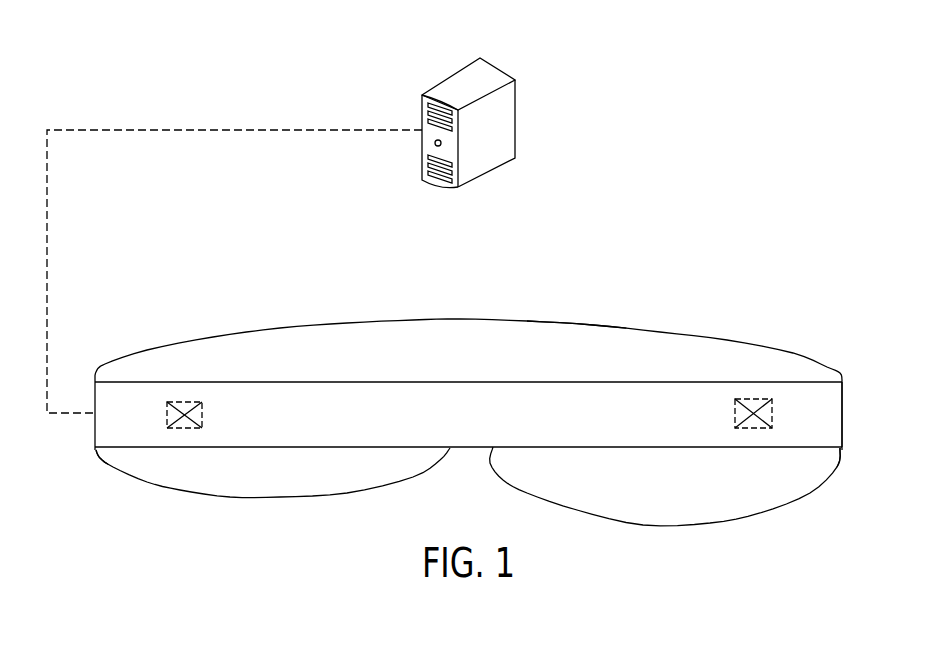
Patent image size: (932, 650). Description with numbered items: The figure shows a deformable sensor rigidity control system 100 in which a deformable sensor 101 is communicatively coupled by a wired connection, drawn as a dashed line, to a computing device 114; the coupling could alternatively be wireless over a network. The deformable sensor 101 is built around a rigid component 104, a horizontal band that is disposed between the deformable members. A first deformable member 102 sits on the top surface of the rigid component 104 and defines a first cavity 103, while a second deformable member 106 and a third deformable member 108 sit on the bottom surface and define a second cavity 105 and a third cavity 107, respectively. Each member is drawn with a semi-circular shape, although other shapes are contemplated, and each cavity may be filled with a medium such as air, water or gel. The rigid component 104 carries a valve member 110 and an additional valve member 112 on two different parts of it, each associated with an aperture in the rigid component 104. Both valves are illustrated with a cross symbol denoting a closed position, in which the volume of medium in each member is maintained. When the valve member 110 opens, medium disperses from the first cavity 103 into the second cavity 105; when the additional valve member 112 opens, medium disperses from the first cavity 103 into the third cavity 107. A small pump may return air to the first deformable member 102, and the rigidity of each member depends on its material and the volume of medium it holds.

The deformable sensor rigidity control system 100 is at (798, 54).
The deformable sensor 101 is at (444, 290).
The first deformable member 102 is at (468, 318).
The first cavity 103 is at (572, 330).
The rigid component 104 is at (843, 415).
The second cavity 105 is at (795, 492).
The second deformable member 106 is at (842, 455).
The third cavity 107 is at (168, 473).
The third deformable member 108 is at (95, 458).
The valve member 110 is at (753, 430).
The additional valve member 112 is at (193, 398).
The computing device 114 is at (517, 102).